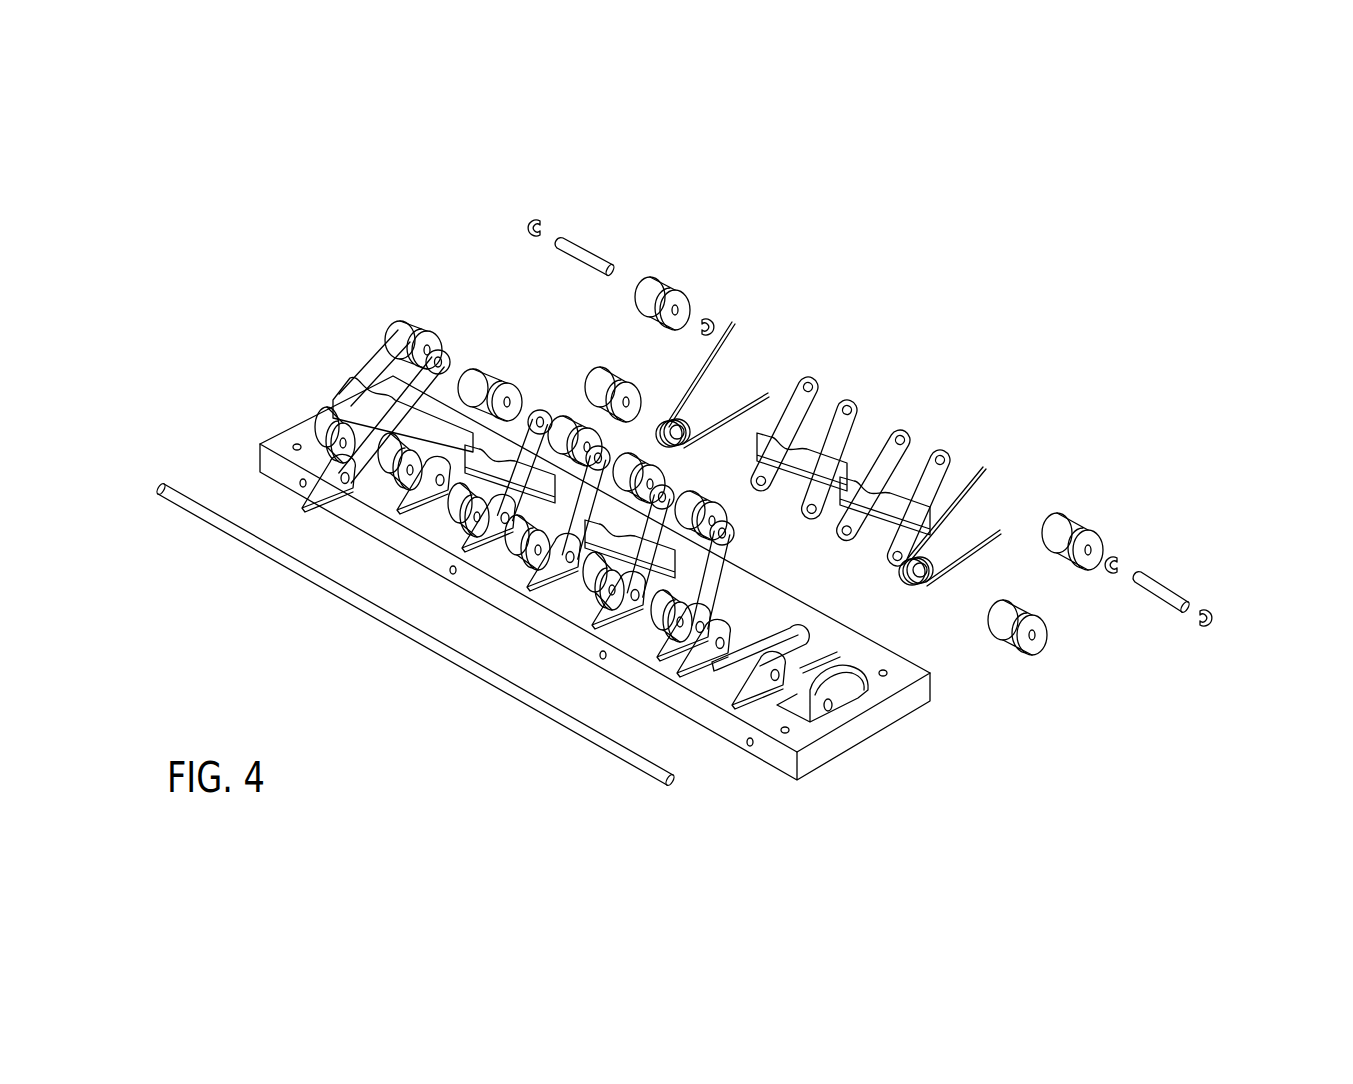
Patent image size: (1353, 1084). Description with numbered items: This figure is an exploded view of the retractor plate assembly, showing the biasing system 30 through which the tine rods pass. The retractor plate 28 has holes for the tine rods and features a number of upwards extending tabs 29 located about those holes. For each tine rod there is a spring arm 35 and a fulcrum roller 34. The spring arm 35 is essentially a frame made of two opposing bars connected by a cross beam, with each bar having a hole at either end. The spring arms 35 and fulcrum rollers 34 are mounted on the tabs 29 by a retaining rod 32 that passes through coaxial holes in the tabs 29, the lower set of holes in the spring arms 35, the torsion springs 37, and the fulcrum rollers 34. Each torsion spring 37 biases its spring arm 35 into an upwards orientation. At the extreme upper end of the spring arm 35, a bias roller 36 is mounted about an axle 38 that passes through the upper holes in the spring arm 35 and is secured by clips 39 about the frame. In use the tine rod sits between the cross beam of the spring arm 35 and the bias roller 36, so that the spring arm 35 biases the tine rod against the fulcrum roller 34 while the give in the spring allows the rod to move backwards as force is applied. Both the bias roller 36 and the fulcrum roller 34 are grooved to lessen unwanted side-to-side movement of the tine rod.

The retractor plate 28 is at (713, 712).
The tabs 29 is at (755, 690).
The biasing system 30 is at (1115, 378).
The retaining rod 32 is at (540, 712).
The fulcrum roller 34 is at (583, 385).
The spring arm 35 is at (902, 437).
The bias roller 36 is at (663, 297).
The torsion spring 37 is at (733, 330).
The axle 38 is at (583, 255).
The clips 39 is at (525, 223).